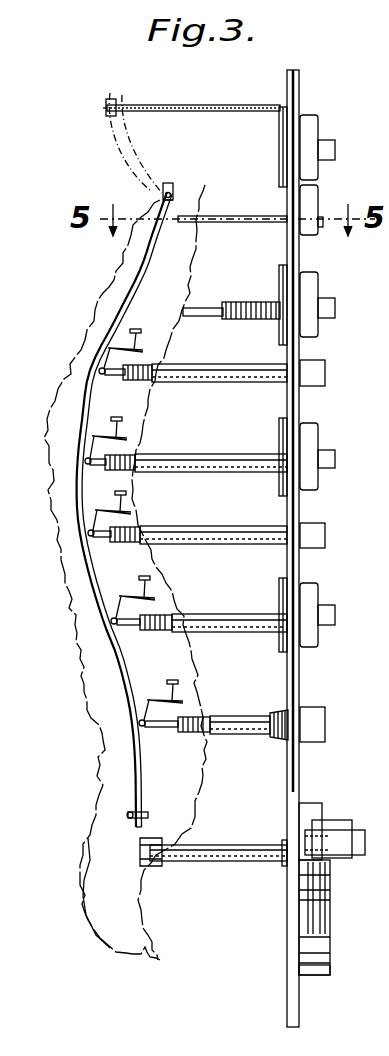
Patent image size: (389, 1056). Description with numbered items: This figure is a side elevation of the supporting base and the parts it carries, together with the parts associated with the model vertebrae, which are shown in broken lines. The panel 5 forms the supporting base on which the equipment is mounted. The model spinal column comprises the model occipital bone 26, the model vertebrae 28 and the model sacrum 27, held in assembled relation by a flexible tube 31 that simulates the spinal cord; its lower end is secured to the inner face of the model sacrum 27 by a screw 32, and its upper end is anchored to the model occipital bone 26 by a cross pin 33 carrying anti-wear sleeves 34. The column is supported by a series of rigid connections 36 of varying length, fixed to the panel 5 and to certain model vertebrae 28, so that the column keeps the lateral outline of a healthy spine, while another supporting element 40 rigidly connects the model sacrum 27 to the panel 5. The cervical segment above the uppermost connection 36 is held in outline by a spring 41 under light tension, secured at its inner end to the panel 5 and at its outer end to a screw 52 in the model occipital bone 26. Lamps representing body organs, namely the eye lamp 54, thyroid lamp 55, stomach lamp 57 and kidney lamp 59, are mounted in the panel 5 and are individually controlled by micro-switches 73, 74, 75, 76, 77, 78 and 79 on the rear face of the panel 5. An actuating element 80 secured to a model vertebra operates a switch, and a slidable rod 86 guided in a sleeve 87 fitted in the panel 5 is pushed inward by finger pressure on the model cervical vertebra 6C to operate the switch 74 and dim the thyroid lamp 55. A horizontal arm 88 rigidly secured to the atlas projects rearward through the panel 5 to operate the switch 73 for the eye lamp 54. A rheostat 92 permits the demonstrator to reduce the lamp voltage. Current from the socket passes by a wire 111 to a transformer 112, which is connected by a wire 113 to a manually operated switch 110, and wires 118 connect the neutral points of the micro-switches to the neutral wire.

The panel 5 is at (300, 82).
The model occipital bone 26 is at (106, 143).
The model sacrum 27 is at (80, 895).
The model vertebrae 28 is at (125, 572).
The flexible tube 31 is at (134, 770).
The screw 32 is at (128, 814).
The cross pin 33 is at (167, 183).
The anti-wear sleeves 34 is at (172, 196).
The rigid connections 36 is at (236, 370).
The supporting element 40 is at (238, 845).
The spring 41 is at (201, 104).
The screw 52 is at (105, 108).
The eye lamp 54 is at (314, 127).
The thyroid lamp 55 is at (312, 282).
The stomach lamp 57 is at (314, 437).
The kidney lamp 59 is at (314, 586).
The model cervical vertebra 6C is at (178, 320).
The switch 73 is at (312, 200).
The switch 74 is at (322, 318).
The switch 75 is at (326, 374).
The switch 76 is at (325, 467).
The switch 77 is at (326, 528).
The switch 78 is at (325, 622).
The switch 79 is at (326, 725).
The actuating element 80 is at (94, 440).
The slidable rod 86 is at (207, 308).
The sleeve 87 is at (255, 296).
The horizontal arm 88 is at (246, 216).
The rheostat 92 is at (302, 710).
The manually operated switch 110 is at (344, 985).
The wire 111 is at (388, 965).
The transformer 112 is at (382, 862).
The wire 113 is at (388, 940).
The wires 118 is at (388, 296).